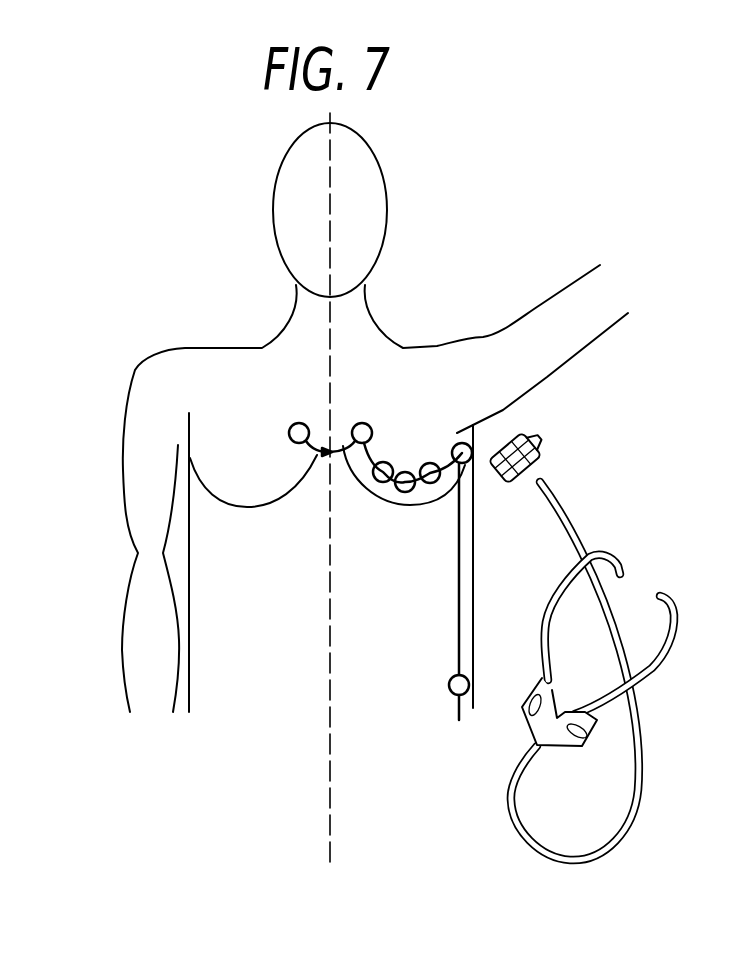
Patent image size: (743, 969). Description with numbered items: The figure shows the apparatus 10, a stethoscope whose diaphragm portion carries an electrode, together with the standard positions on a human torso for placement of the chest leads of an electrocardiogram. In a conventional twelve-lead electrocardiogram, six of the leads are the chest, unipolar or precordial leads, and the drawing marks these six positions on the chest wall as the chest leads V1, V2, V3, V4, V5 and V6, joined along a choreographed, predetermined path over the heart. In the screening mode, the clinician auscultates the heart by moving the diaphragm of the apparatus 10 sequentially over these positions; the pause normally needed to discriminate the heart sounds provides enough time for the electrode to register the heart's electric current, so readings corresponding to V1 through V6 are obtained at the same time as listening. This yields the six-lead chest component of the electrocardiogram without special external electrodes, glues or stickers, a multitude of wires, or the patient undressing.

The apparatus 10 is at (608, 525).
The chest lead V1 is at (296, 418).
The chest lead V2 is at (354, 418).
The chest lead V3 is at (385, 459).
The chest lead V4 is at (408, 467).
The chest lead V5 is at (432, 458).
The chest lead V6 is at (455, 438).